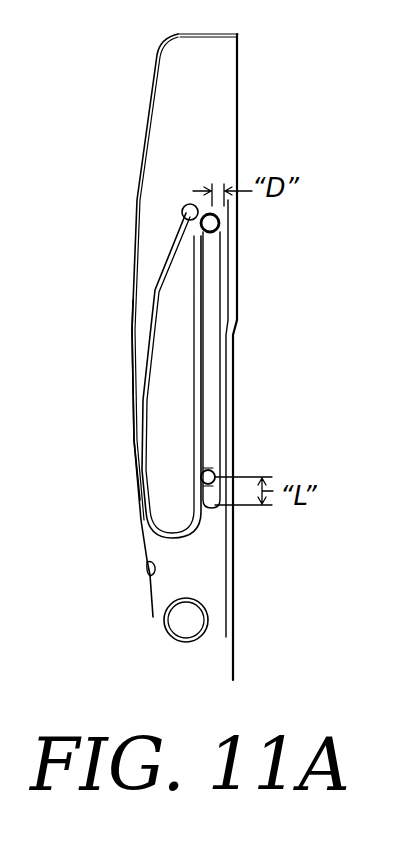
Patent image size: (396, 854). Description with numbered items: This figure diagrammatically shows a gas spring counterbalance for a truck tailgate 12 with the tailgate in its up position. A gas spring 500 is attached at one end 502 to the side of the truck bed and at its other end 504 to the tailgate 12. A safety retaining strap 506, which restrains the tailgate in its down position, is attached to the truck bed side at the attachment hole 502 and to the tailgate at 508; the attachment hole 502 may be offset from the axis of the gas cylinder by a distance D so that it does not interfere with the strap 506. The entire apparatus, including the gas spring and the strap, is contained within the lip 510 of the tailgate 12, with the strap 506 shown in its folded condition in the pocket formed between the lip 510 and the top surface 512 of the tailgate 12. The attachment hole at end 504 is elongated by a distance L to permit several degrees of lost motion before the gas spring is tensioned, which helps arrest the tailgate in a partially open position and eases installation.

The tailgate 12 is at (224, 168).
The gas spring 500 is at (217, 382).
The attachment hole 502 is at (221, 228).
The end of gas spring 504 is at (216, 472).
The safety retaining strap 506 is at (147, 352).
The tailgate strap attachment 508 is at (182, 205).
The lip 510 is at (132, 425).
The top surface 512 is at (238, 303).